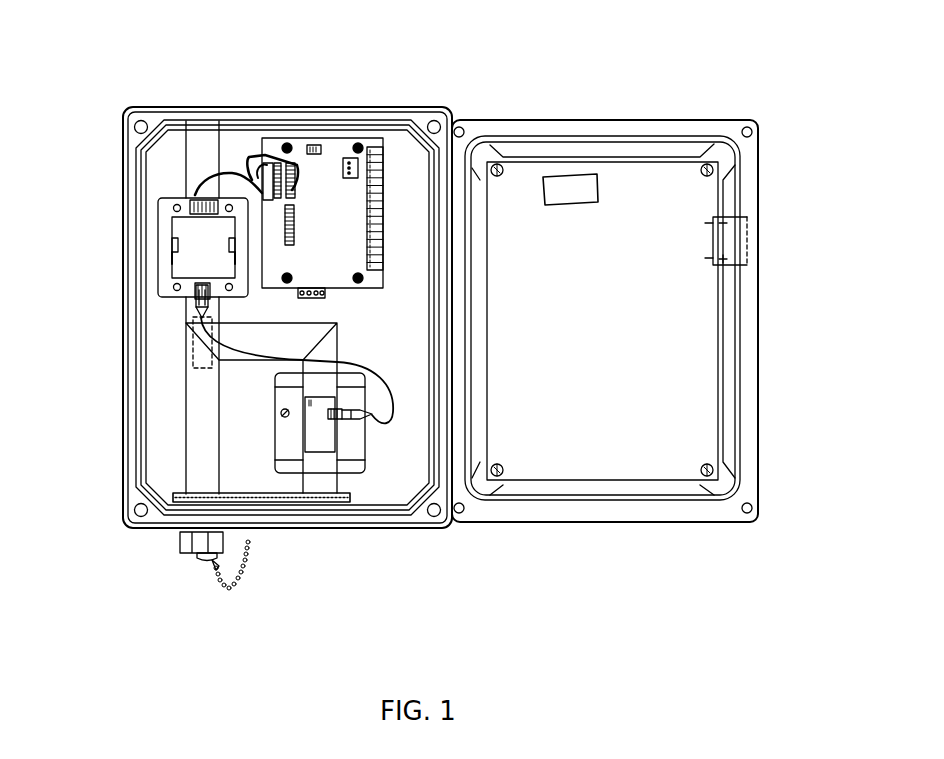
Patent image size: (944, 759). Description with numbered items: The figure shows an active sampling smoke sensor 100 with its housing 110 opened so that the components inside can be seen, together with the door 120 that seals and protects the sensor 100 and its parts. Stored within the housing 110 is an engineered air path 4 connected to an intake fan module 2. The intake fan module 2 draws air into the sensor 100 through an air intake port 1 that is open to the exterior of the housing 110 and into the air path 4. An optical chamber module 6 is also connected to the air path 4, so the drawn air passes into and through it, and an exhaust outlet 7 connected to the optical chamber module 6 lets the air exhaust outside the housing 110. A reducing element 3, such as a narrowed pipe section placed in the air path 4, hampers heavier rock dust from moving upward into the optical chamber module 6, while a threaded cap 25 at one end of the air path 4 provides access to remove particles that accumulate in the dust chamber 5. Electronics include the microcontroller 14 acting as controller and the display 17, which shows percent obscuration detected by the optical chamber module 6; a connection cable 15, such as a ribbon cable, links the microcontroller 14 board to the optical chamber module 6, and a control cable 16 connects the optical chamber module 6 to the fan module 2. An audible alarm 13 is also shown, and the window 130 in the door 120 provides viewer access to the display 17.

The air intake port 1 is at (322, 530).
The intake fan module 2 is at (323, 438).
The reducing element 3 is at (195, 338).
The air path 4 is at (333, 480).
The dust chamber 5 is at (202, 414).
The optical chamber module 6 is at (192, 232).
The exhaust outlet 7 is at (190, 121).
The audible alarm 13 is at (728, 243).
The microcontroller 14 is at (333, 213).
The connection cable 15 is at (238, 173).
The control cable 16 is at (355, 362).
The display 17 is at (377, 278).
The threaded cap 25 is at (185, 548).
The active sampling smoke sensor 100 is at (615, 550).
The housing 110 is at (122, 128).
The door 120 is at (762, 347).
The window 130 is at (596, 176).